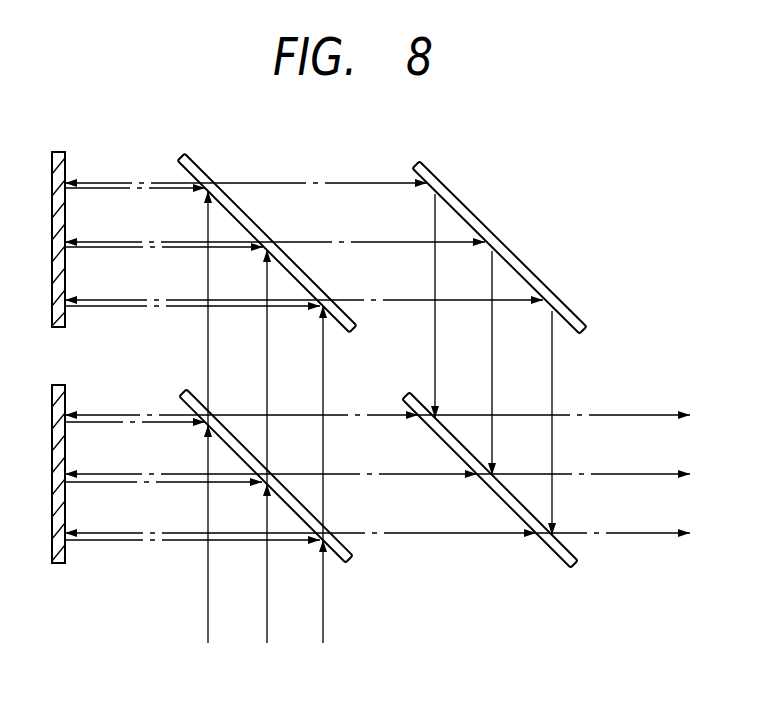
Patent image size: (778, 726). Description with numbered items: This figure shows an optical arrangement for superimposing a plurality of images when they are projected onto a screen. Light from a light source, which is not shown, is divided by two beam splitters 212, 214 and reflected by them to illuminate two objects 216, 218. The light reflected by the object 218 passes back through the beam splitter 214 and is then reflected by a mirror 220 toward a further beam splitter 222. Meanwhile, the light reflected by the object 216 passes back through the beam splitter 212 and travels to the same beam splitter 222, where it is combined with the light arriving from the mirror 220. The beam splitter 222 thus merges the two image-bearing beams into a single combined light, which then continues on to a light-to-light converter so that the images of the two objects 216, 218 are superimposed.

The beam splitter 212 is at (352, 560).
The beam splitter 214 is at (202, 162).
The object 216 is at (62, 384).
The object 218 is at (57, 150).
The mirror 220 is at (440, 167).
The beam splitter 222 is at (577, 563).